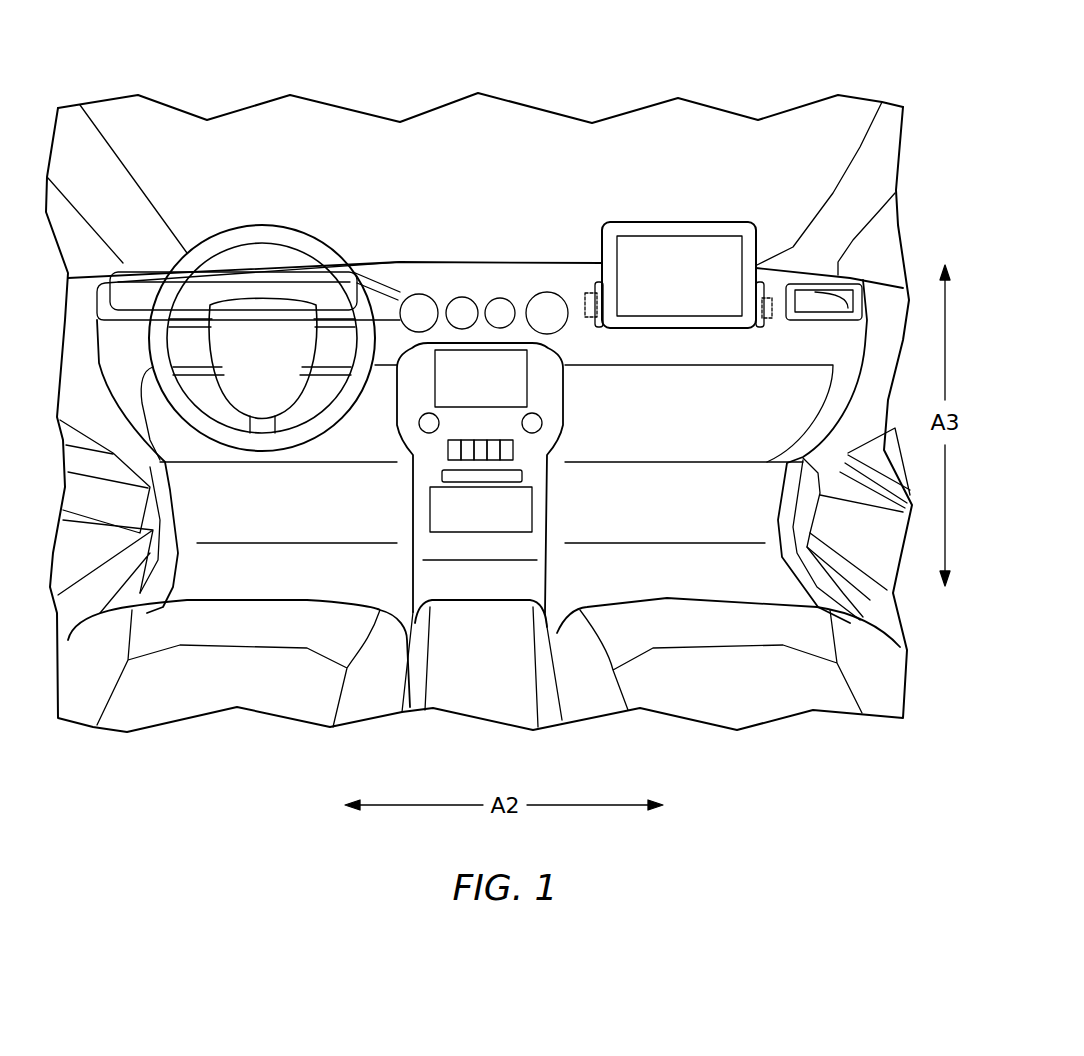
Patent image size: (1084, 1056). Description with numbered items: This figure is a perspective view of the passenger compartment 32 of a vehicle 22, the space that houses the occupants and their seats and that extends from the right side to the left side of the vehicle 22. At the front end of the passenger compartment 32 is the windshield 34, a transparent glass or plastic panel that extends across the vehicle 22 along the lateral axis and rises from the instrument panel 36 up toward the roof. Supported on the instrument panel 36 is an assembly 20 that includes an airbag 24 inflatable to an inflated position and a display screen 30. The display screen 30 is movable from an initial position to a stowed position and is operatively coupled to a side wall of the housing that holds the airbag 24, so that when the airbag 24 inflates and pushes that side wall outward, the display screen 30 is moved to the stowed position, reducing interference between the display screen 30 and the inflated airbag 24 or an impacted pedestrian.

The assembly 20 is at (574, 218).
The vehicle 22 is at (222, 90).
The airbag 24 is at (591, 292).
The display screen 30 is at (695, 258).
The passenger compartment 32 is at (496, 138).
The windshield 34 is at (293, 173).
The instrument panel 36 is at (467, 275).